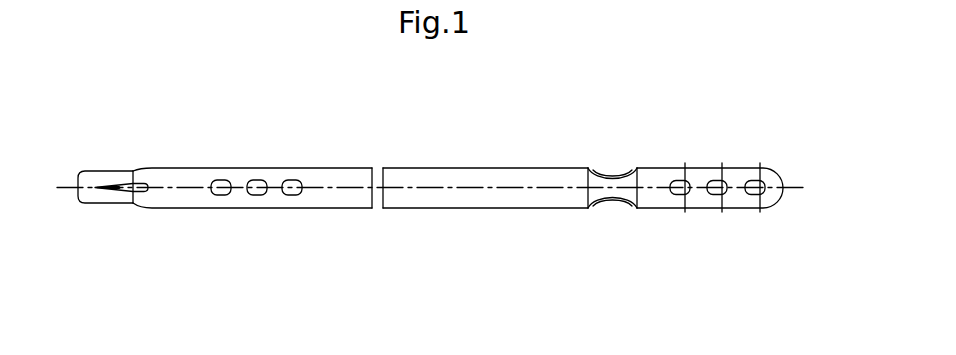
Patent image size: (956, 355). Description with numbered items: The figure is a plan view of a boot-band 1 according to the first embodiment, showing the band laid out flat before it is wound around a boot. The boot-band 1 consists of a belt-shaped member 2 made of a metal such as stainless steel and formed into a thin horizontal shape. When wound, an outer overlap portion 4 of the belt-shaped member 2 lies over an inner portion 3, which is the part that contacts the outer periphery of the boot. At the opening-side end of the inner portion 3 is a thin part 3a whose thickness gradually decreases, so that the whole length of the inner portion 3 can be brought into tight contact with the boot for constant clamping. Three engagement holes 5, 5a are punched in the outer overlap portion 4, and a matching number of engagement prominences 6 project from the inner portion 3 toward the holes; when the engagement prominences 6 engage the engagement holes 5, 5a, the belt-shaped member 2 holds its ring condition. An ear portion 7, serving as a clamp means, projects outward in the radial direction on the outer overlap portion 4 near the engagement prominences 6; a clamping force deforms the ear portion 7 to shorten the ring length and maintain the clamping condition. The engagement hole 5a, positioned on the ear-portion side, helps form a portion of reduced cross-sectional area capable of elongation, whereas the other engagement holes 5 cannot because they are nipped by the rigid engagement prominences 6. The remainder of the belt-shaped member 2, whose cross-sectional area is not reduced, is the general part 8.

The boot-band 1 is at (450, 143).
The belt-shaped member 2 is at (392, 161).
The inner portion 3 is at (175, 175).
The thin part 3a is at (90, 180).
The outer overlap portion 4 is at (735, 173).
The engagement holes 5 is at (710, 194).
The engagement hole 5a is at (677, 180).
The engagement prominences 6 is at (227, 183).
The ear portion 7 is at (603, 168).
The general part 8 is at (503, 172).